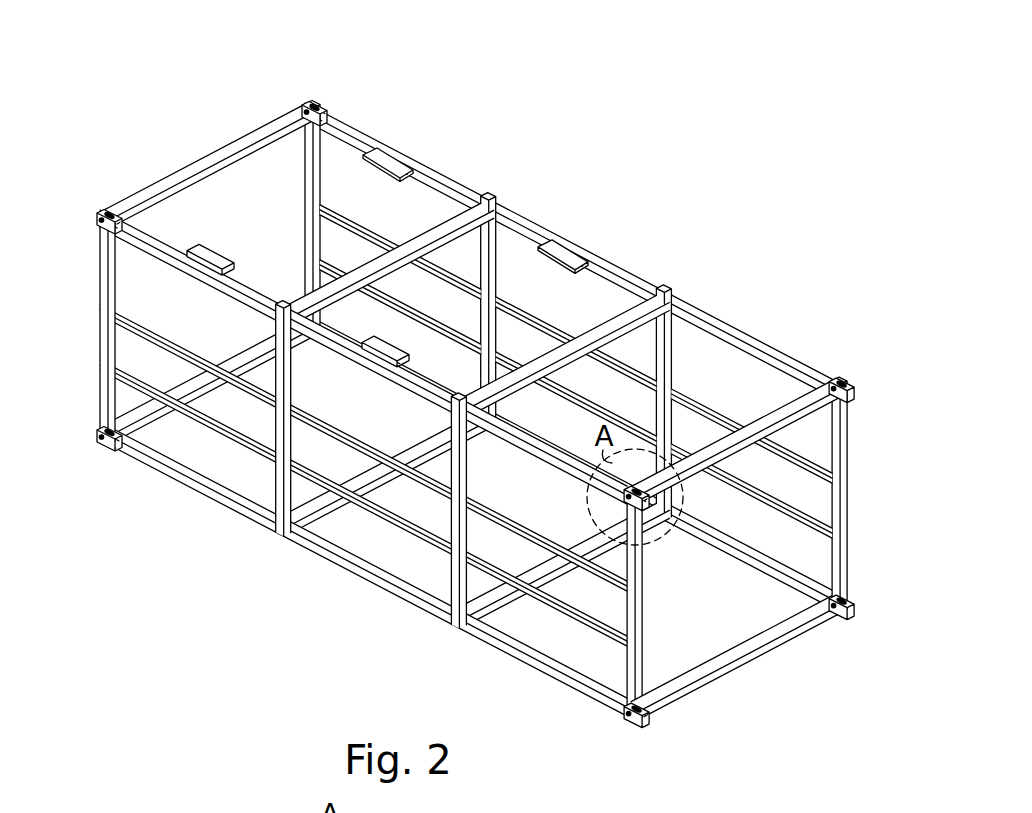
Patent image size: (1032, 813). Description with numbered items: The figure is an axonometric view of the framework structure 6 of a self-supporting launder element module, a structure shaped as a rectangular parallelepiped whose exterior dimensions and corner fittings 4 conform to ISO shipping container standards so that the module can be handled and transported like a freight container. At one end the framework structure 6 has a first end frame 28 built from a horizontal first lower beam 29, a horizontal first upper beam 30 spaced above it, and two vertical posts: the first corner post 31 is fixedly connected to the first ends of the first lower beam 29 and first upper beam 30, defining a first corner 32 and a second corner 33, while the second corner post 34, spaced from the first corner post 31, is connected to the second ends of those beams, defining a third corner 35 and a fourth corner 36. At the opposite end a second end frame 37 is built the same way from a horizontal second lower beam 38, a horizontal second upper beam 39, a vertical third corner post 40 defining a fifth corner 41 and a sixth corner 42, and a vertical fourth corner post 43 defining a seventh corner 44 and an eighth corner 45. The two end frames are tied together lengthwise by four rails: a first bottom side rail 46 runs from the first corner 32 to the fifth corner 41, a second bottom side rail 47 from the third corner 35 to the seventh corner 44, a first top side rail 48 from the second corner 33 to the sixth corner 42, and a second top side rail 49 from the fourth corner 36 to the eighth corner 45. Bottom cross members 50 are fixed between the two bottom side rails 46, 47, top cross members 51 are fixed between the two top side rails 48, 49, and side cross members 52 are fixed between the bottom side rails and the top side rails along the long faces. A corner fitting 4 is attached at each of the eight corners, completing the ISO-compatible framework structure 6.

The corner fitting 4 is at (322, 104).
The framework structure 6 is at (477, 394).
The first end frame 28 is at (682, 712).
The first lower beam 29 is at (735, 670).
The first upper beam 30 is at (767, 422).
The first corner post 31 is at (628, 662).
The first corner 32 is at (631, 726).
The second corner 33 is at (645, 503).
The second corner post 34 is at (849, 527).
The third corner 35 is at (848, 622).
The fourth corner 36 is at (858, 392).
The second end frame 37 is at (210, 148).
The second lower beam 38 is at (250, 357).
The second upper beam 39 is at (185, 178).
The third corner post 40 is at (104, 320).
The fifth corner 41 is at (100, 434).
The sixth corner 42 is at (108, 210).
The fourth corner post 43 is at (305, 232).
The seventh corner 44 is at (303, 342).
The eighth corner 45 is at (315, 100).
The first bottom side rail 46 is at (383, 581).
The second bottom side rail 47 is at (732, 543).
The first top side rail 48 is at (413, 384).
The second top side rail 49 is at (612, 250).
The bottom cross member 50 is at (333, 515).
The top cross member 51 is at (337, 292).
The side cross member 52 is at (497, 258).